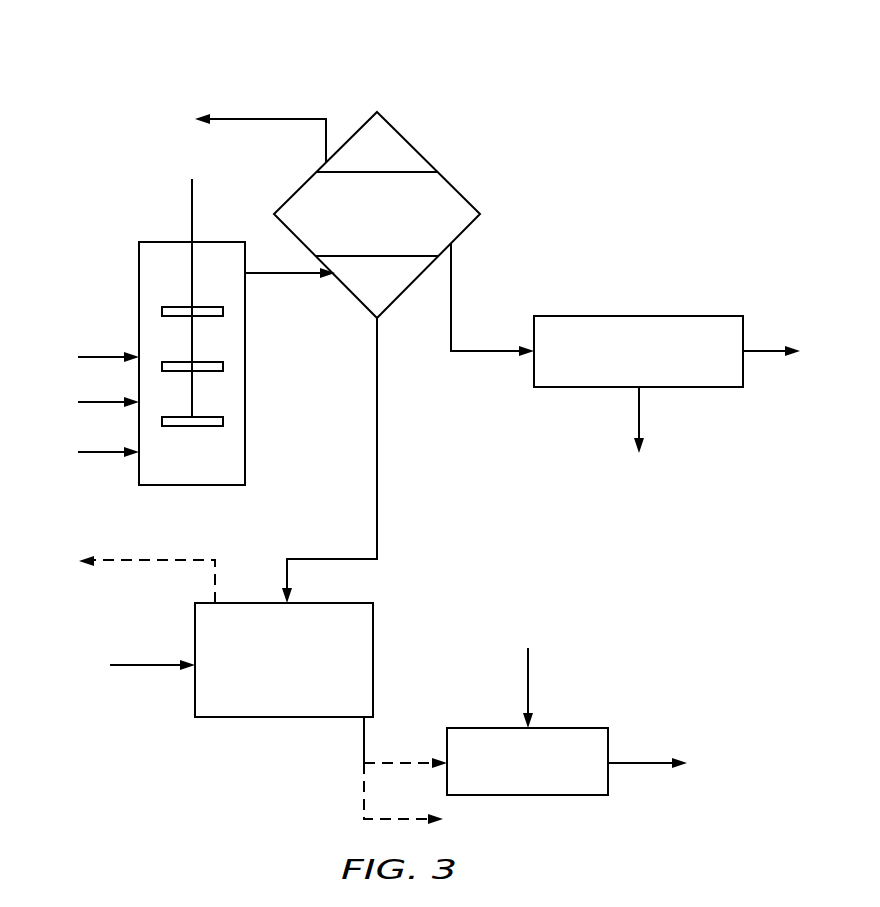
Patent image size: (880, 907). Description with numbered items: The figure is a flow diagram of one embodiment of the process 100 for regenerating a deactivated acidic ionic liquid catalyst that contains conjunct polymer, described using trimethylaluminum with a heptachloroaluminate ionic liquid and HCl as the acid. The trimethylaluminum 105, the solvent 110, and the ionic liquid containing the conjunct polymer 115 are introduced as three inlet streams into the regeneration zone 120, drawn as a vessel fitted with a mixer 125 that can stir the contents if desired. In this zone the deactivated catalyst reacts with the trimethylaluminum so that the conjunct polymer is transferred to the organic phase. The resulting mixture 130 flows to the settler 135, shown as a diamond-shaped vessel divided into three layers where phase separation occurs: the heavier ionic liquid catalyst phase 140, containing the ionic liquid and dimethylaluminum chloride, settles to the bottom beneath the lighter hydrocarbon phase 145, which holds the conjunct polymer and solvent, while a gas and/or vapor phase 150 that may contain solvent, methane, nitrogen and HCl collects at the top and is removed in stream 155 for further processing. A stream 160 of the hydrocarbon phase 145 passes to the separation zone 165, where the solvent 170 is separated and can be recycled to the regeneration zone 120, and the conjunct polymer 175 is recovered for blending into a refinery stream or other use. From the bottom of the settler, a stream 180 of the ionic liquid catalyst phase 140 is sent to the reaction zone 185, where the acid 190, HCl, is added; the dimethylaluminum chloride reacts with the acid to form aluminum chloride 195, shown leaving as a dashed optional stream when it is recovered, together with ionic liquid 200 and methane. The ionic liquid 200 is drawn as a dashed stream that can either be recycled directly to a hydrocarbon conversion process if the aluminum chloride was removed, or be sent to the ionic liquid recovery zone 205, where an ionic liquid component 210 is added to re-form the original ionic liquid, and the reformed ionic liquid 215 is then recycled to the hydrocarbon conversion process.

The process 100 is at (116, 55).
The trimethylaluminum 105 is at (93, 357).
The solvent 110 is at (93, 402).
The ionic liquid containing the conjunct polymer 115 is at (93, 452).
The regeneration zone 120 is at (203, 242).
The mixer 125 is at (190, 208).
The mixture 130 is at (282, 273).
The settler 135 is at (417, 152).
The ionic liquid catalyst phase 140 is at (357, 297).
The hydrocarbon phase 145 is at (463, 198).
The gas and/or vapor phase 150 is at (360, 130).
The stream 155 is at (290, 117).
The stream of the hydrocarbon phase 160 is at (452, 272).
The separation zone 165 is at (688, 316).
The solvent 170 is at (640, 411).
The conjunct polymer 175 is at (773, 352).
The stream of the ionic liquid catalyst phase 180 is at (378, 350).
The reaction zone 185 is at (334, 603).
The acid 190 is at (148, 665).
The aluminum chloride 195 is at (190, 559).
The ionic liquid 200 is at (362, 738).
The ionic liquid recovery zone 205 is at (573, 728).
The ionic liquid component 210 is at (527, 663).
The reformed ionic liquid 215 is at (647, 764).